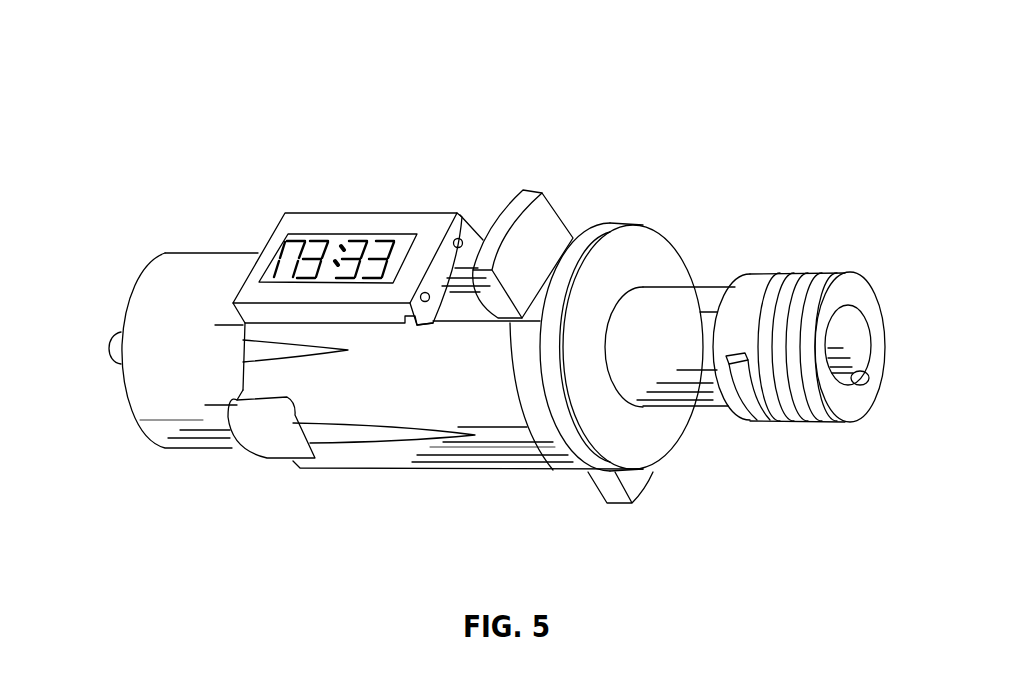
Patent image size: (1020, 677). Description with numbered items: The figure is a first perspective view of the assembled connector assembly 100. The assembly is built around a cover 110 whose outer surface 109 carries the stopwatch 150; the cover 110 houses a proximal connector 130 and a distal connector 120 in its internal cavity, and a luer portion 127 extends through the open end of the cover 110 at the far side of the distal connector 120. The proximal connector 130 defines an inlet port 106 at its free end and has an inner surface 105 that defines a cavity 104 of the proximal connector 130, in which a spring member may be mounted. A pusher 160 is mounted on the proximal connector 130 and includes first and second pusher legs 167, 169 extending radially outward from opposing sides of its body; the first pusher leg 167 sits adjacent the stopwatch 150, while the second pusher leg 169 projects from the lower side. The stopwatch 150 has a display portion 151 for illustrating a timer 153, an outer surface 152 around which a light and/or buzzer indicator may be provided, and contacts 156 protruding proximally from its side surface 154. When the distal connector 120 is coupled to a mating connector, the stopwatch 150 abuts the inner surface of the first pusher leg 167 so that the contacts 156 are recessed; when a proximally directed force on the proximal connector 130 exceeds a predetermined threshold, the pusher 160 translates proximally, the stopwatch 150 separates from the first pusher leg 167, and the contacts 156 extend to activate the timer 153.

The connector assembly 100 is at (110, 74).
The cavity 104 is at (862, 334).
The inner surface 105 is at (858, 386).
The inlet port 106 is at (845, 306).
The outer surface 109 is at (517, 462).
The cover 110 is at (357, 482).
The distal connector 120 is at (200, 245).
The luer portion 127 is at (117, 334).
The proximal connector 130 is at (714, 272).
The stopwatch 150 is at (323, 206).
The display portion 151 is at (362, 230).
The outer surface 152 is at (405, 223).
The timer 153 is at (299, 233).
The side surface 154 is at (443, 255).
The contact 156 is at (462, 240).
The pusher 160 is at (549, 184).
The first pusher leg 167 is at (529, 189).
The second pusher leg 169 is at (655, 478).